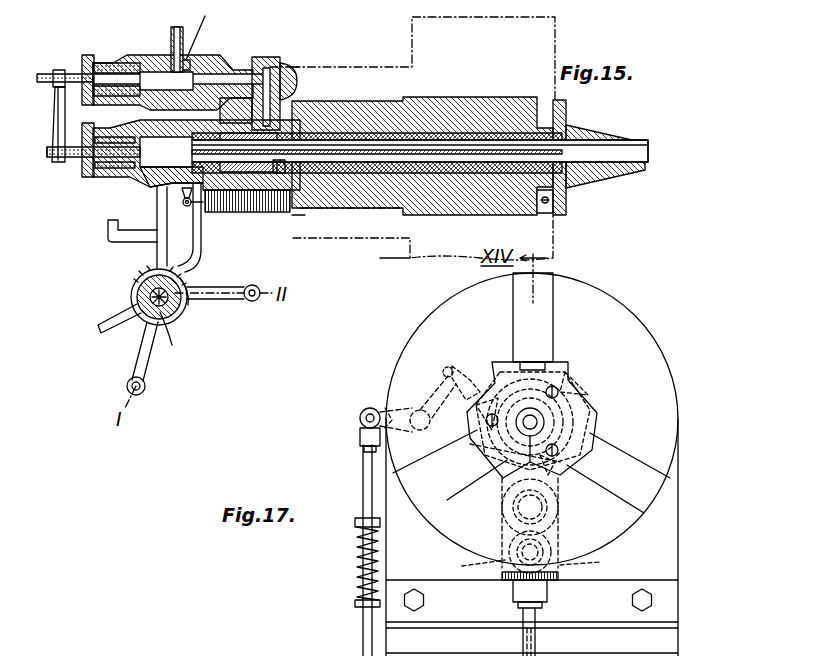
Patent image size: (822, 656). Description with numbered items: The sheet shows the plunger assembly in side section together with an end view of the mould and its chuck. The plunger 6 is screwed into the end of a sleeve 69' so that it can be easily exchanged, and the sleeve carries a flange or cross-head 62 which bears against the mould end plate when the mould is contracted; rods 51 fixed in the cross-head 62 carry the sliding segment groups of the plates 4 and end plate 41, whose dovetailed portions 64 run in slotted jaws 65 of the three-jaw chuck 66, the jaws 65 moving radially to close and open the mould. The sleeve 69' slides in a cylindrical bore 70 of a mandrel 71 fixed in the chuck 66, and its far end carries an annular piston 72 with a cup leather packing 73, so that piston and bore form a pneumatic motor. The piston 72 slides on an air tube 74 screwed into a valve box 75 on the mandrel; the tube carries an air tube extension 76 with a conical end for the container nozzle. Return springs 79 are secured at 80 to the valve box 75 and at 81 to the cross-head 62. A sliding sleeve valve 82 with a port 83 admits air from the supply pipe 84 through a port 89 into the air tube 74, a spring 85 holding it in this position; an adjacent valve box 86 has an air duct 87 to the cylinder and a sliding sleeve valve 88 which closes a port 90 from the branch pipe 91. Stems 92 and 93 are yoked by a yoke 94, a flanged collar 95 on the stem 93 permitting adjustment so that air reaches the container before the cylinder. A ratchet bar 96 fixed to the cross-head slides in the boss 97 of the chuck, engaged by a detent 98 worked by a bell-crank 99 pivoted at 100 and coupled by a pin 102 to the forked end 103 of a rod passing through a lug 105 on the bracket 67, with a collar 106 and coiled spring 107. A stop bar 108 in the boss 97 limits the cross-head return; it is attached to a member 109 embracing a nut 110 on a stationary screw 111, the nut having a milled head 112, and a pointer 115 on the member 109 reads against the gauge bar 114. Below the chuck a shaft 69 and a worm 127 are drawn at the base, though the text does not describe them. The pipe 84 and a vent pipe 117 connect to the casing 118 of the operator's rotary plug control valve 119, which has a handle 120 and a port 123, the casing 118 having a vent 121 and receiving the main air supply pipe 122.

In FIG. 17, the mould plates 4 is at (580, 392).
In FIG. 15, the plunger 6 is at (578, 138).
In FIG. 17, the end plate 41 is at (560, 385).
In FIG. 17, the rod 51 is at (560, 390).
In FIG. 15, the cross-head 62 is at (566, 200).
In FIG. 17, the dovetailed portions 64 is at (597, 417).
In FIG. 17, the jaws 65 is at (557, 362).
In FIG. 15, the chuck 66 is at (555, 24).
In FIG. 17, the chuck 66 is at (648, 284).
In FIG. 17, the bracket 67 is at (532, 537).
In FIG. 17, the shaft 69 is at (502, 623).
In FIG. 15, the sleeve 69' is at (409, 227).
In FIG. 15, the cylindrical bore 70 is at (252, 213).
In FIG. 15, the mandrel 71 is at (375, 97).
In FIG. 15, the annular piston 72 is at (306, 215).
In FIG. 15, the cup leather packing 73 is at (270, 112).
In FIG. 15, the air tube 74 is at (372, 210).
In FIG. 15, the valve box 75 is at (150, 126).
In FIG. 15, the air tube extension 76 is at (640, 134).
In FIG. 15, the return springs 79 is at (283, 213).
In FIG. 15, the spring anchorage on valve box 80 is at (192, 206).
In FIG. 15, the spring anchorage on cross-head 81 is at (548, 210).
In FIG. 15, the sliding sleeve valve 82 is at (128, 180).
In FIG. 15, the port 83 is at (208, 152).
In FIG. 15, the air supply pipe 84 is at (156, 250).
In FIG. 15, the spring 85 is at (84, 178).
In FIG. 15, the valve box 86 is at (176, 30).
In FIG. 15, the air duct 87 is at (232, 75).
In FIG. 15, the sliding sleeve valve 88 is at (148, 62).
In FIG. 15, the port 89 is at (150, 185).
In FIG. 15, the port 90 is at (192, 62).
In FIG. 15, the air supply pipe 91 is at (96, 234).
In FIG. 15, the valve stem 92 is at (56, 160).
In FIG. 15, the valve stem 93 is at (112, 63).
In FIG. 15, the yoke 94 is at (80, 54).
In FIG. 15, the flanged screw-threaded collar 95 is at (58, 72).
In FIG. 17, the ratchet bar 96 is at (510, 372).
In FIG. 15, the boss 97 is at (345, 70).
In FIG. 17, the detent 98 is at (448, 366).
In FIG. 17, the bell-crank 99 is at (385, 400).
In FIG. 17, the pivot 100 is at (420, 410).
In FIG. 17, the pin 102 is at (362, 412).
In FIG. 17, the forked end 103 is at (360, 432).
In FIG. 17, the lug 105 is at (355, 605).
In FIG. 17, the collar 106 is at (357, 530).
In FIG. 17, the coiled spring 107 is at (357, 572).
In FIG. 17, the stop bar 108 is at (482, 468).
In FIG. 17, the member 109 is at (560, 500).
In FIG. 17, the nut 110 is at (558, 520).
In FIG. 17, the stationary screw 111 is at (502, 494).
In FIG. 17, the milled head 112 is at (502, 522).
In FIG. 17, the gauge bar 114 is at (600, 563).
In FIG. 17, the pointer 115 is at (466, 562).
In FIG. 15, the vent pipe 117 is at (202, 258).
In FIG. 15, the casing 118 is at (132, 290).
In FIG. 15, the control valve 119 is at (170, 340).
In FIG. 15, the handle 120 is at (146, 390).
In FIG. 15, the vent 121 is at (185, 315).
In FIG. 15, the main air supply pipe 122 is at (108, 322).
In FIG. 15, the port 123 is at (170, 302).
In FIG. 17, the worm 127 is at (555, 590).